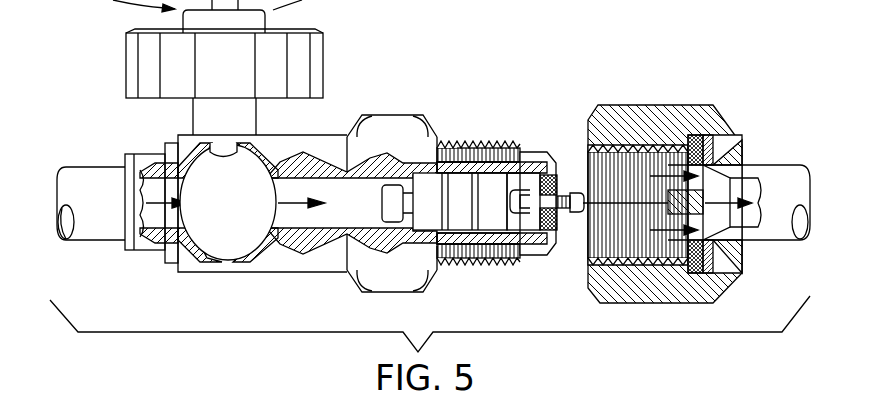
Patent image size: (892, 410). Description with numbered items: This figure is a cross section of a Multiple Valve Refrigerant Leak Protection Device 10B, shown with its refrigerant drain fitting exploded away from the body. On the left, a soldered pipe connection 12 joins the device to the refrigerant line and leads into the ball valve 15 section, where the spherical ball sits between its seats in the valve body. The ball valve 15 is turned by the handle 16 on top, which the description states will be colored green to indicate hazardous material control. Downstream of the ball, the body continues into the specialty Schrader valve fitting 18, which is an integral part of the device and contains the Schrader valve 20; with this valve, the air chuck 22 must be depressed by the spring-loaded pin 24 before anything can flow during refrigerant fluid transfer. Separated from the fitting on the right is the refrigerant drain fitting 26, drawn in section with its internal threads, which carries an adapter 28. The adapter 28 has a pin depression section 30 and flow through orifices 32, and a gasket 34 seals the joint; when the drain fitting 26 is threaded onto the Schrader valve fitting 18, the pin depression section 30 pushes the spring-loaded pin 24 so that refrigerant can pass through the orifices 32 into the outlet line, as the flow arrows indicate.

The valve assembly 10B is at (203, 409).
The soldered pipe connection 12 is at (83, 182).
The ball valve 15 is at (215, 225).
The handle 16 is at (127, 35).
The specialty Schrader valve fitting 18 is at (413, 132).
The Schrader valve 20 is at (425, 195).
The air chuck 22 is at (465, 263).
The spring-loaded pin 24 is at (578, 190).
The refrigerant drain fitting 26 is at (658, 105).
The adapter 28 is at (692, 135).
The pin depression section 30 is at (621, 148).
The flow through orifices 32 is at (703, 227).
The gasket 34 is at (713, 145).